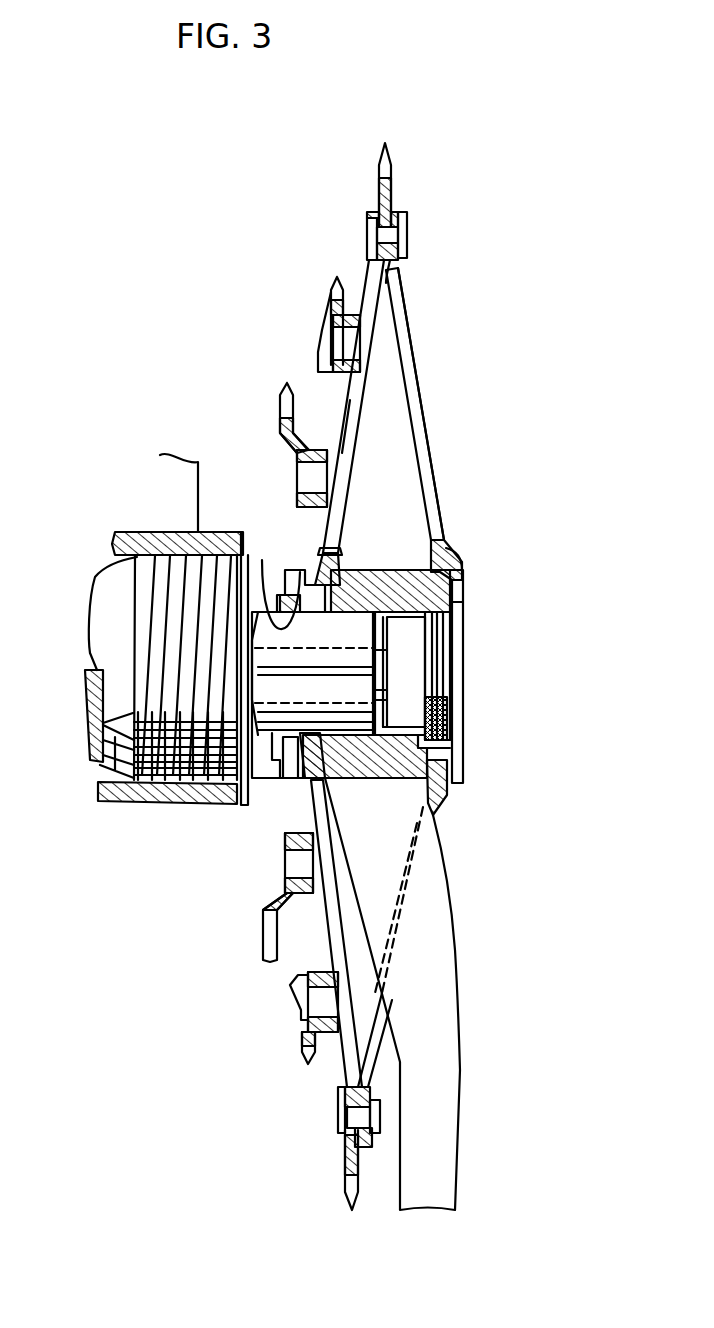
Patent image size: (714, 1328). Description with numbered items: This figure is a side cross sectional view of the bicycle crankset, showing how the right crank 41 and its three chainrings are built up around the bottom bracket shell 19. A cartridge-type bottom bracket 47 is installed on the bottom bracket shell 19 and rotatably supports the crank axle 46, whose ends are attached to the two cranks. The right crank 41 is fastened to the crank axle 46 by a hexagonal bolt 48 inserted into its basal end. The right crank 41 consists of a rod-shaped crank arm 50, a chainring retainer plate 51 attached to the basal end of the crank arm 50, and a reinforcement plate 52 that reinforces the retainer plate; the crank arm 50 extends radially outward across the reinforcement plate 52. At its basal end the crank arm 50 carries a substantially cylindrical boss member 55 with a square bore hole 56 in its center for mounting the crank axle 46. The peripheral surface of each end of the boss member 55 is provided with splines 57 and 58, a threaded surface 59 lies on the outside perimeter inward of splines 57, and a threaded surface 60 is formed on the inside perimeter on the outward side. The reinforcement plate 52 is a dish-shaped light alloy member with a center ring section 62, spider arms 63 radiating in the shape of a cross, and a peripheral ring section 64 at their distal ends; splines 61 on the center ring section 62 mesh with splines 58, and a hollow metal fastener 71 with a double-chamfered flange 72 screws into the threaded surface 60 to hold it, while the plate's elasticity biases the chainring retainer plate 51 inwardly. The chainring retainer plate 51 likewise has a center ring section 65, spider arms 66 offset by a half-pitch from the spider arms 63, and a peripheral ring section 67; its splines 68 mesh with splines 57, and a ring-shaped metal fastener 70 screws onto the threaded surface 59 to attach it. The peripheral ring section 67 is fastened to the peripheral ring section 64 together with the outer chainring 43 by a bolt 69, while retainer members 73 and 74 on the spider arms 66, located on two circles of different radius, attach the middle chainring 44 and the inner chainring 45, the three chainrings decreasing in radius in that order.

The bottom bracket shell 19 is at (225, 530).
The right crank 41 is at (454, 859).
The outer chainring 43 is at (392, 188).
The middle chainring 44 is at (335, 287).
The inner chainring 45 is at (283, 420).
The crank axle 46 is at (233, 797).
The bottom bracket 47 is at (123, 797).
The hexagonal bolt 48 is at (407, 648).
The crank arm 50 is at (428, 922).
The chainring retainer plate 51 is at (347, 450).
The reinforcement plate 52 is at (428, 438).
The boss member 55 is at (437, 540).
The square bore hole 56 is at (366, 608).
The splines 57 is at (330, 550).
The splines 58 is at (463, 572).
The threaded surface 59 is at (273, 752).
The threaded surface 60 is at (450, 728).
The splines 61 is at (463, 602).
The center ring section 62 is at (455, 562).
The spider arms 63 is at (417, 378).
The peripheral ring section 64 is at (399, 258).
The center ring section 65 is at (307, 573).
The spider arms 66 is at (353, 397).
The peripheral ring section 67 is at (399, 213).
The splines 68 is at (265, 578).
The bolt 69 is at (380, 235).
The ring-shaped metal fastener 70 is at (290, 768).
The hollow metal fastener 71 is at (464, 702).
The double-chamfered flange 72 is at (460, 766).
The retainer member 73 is at (361, 318).
The retainer member 74 is at (320, 448).